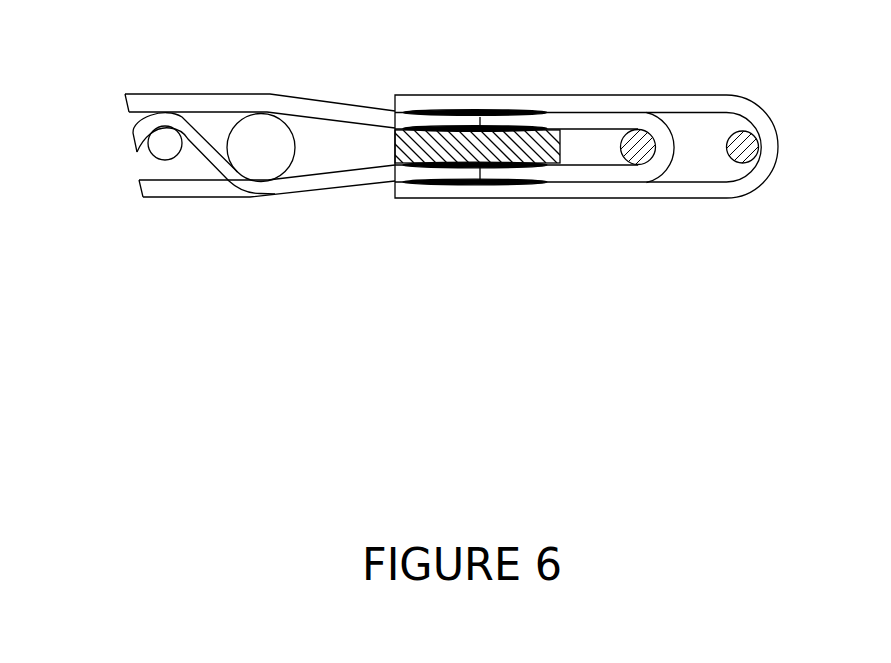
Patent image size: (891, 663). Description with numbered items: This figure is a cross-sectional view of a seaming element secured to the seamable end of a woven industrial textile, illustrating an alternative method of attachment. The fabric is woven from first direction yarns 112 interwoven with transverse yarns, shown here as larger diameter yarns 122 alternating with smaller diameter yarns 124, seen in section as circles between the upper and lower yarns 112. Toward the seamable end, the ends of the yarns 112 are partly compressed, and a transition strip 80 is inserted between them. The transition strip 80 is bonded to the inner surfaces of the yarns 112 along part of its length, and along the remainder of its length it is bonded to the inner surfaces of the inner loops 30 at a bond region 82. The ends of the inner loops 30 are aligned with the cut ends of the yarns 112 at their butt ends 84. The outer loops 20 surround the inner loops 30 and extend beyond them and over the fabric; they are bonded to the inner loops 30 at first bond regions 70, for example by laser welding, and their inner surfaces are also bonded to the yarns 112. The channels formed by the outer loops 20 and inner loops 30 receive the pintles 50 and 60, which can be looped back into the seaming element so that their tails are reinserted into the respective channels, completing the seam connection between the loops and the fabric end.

The outer loops 20 is at (752, 115).
The inner loops 30 is at (665, 150).
The pintle 50 is at (755, 148).
The pintle 60 is at (637, 155).
The first bond regions 70 is at (508, 112).
The transition strip 80 is at (510, 147).
The bond region 82 is at (423, 126).
The butt ends 84 is at (475, 172).
The first direction yarns 112 is at (167, 103).
The larger diameter yarns 122 is at (260, 150).
The smaller diameter yarns 124 is at (165, 150).